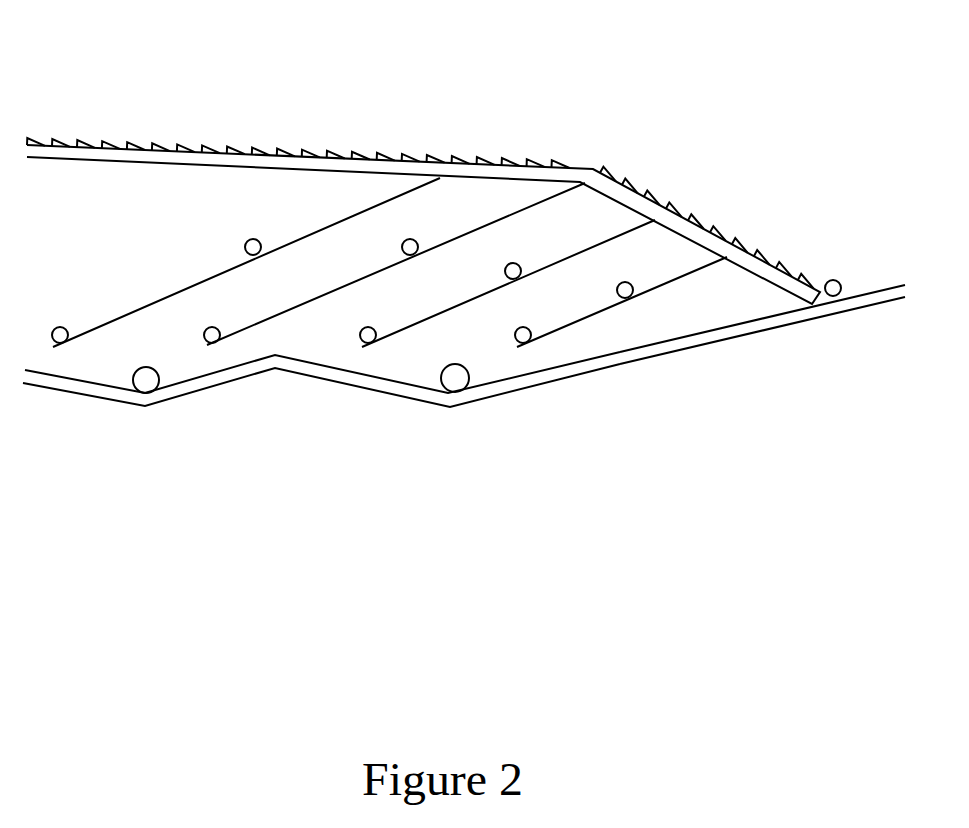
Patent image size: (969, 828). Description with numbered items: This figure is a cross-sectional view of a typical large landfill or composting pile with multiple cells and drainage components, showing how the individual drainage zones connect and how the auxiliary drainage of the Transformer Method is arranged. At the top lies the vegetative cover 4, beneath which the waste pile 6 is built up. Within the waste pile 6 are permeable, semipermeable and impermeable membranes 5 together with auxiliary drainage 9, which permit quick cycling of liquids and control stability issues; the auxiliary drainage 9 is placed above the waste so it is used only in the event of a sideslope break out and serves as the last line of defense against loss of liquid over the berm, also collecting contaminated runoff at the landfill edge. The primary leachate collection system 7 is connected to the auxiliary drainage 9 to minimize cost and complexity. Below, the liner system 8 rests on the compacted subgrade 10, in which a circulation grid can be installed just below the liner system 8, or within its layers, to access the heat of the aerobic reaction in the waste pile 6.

The vegetative cover 4 is at (157, 137).
The permeable, semipermeable and impermeable membranes 5 is at (625, 228).
The waste pile 6 is at (163, 250).
The primary leachate collection system 7 is at (430, 390).
The liner system 8 is at (503, 400).
The auxiliary drainage 9 is at (818, 300).
The compacted subgrade 10 is at (823, 358).